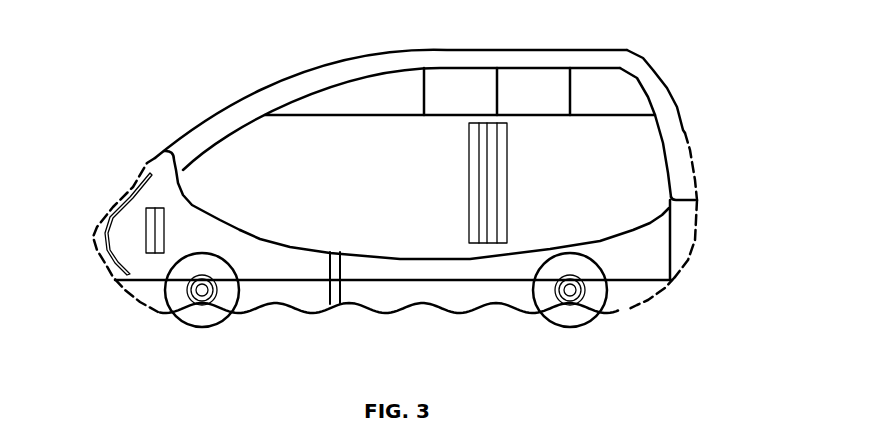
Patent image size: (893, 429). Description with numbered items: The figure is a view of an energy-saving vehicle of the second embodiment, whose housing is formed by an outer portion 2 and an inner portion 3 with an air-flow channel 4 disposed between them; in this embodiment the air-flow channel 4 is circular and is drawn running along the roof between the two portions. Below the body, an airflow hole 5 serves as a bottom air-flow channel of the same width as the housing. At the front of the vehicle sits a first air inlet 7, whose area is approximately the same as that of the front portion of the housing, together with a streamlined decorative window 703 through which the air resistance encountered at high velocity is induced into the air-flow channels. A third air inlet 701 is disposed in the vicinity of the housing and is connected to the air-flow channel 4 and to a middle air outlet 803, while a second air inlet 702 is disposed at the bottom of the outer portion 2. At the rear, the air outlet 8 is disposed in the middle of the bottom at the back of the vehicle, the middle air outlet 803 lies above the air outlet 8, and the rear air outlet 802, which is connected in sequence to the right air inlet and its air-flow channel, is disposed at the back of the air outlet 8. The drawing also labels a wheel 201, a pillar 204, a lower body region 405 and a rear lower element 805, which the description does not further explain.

The outer portion 2 is at (628, 49).
The inner portion 3 is at (636, 78).
The air-flow channel 4 is at (655, 97).
The airflow hole 5 is at (237, 260).
The first air inlet 7 is at (97, 248).
The air outlet 8 is at (695, 240).
The wheel 201 is at (547, 312).
The pillar 204 is at (340, 282).
The side sill 405 is at (423, 290).
The third air inlet 701 is at (497, 133).
The second air inlet 702 is at (482, 308).
The decorative window 703 is at (482, 128).
The rear air outlet 802 is at (645, 262).
The middle air outlet 803 is at (690, 147).
The rear lower panel 805 is at (633, 307).